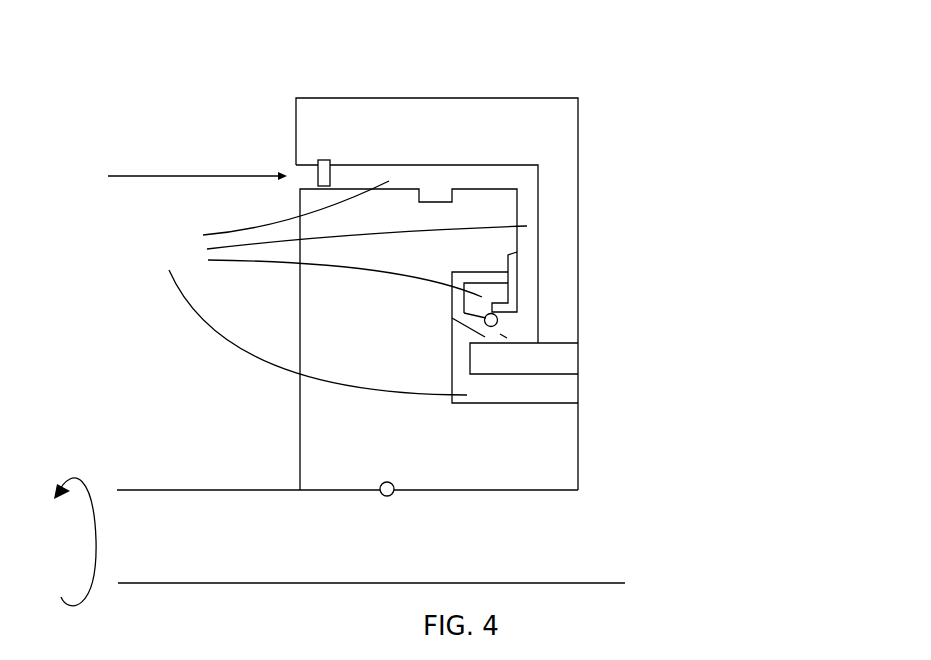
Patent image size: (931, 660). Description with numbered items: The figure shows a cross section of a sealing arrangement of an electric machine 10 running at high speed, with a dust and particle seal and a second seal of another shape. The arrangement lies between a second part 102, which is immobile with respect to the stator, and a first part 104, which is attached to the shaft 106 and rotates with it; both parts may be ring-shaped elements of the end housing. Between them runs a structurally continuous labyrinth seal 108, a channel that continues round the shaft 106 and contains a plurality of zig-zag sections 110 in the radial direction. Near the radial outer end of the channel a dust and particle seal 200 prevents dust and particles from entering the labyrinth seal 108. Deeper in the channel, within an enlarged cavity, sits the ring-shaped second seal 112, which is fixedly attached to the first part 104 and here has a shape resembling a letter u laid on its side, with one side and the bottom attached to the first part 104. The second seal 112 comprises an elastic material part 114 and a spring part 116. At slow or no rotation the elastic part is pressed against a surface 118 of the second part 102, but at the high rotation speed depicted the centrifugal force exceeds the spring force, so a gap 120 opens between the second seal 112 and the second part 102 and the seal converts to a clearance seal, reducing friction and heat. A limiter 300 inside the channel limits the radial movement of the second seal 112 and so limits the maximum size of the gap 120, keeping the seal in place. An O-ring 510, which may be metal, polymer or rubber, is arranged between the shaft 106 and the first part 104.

The electric machine 10 is at (639, 157).
The second part 102 is at (367, 97).
The first part 104 is at (373, 352).
The shaft 106 is at (354, 539).
The labyrinth seal 108 is at (179, 176).
The zig-zag sections 110 is at (344, 288).
The second seal 112 is at (470, 271).
The elastic material part 114 is at (452, 292).
The spring part 116 is at (498, 320).
The surface 118 is at (498, 344).
The gap 120 is at (507, 338).
The dust and particle seal 200 is at (322, 160).
The limiter 300 is at (514, 253).
The O-ring 510 is at (391, 482).